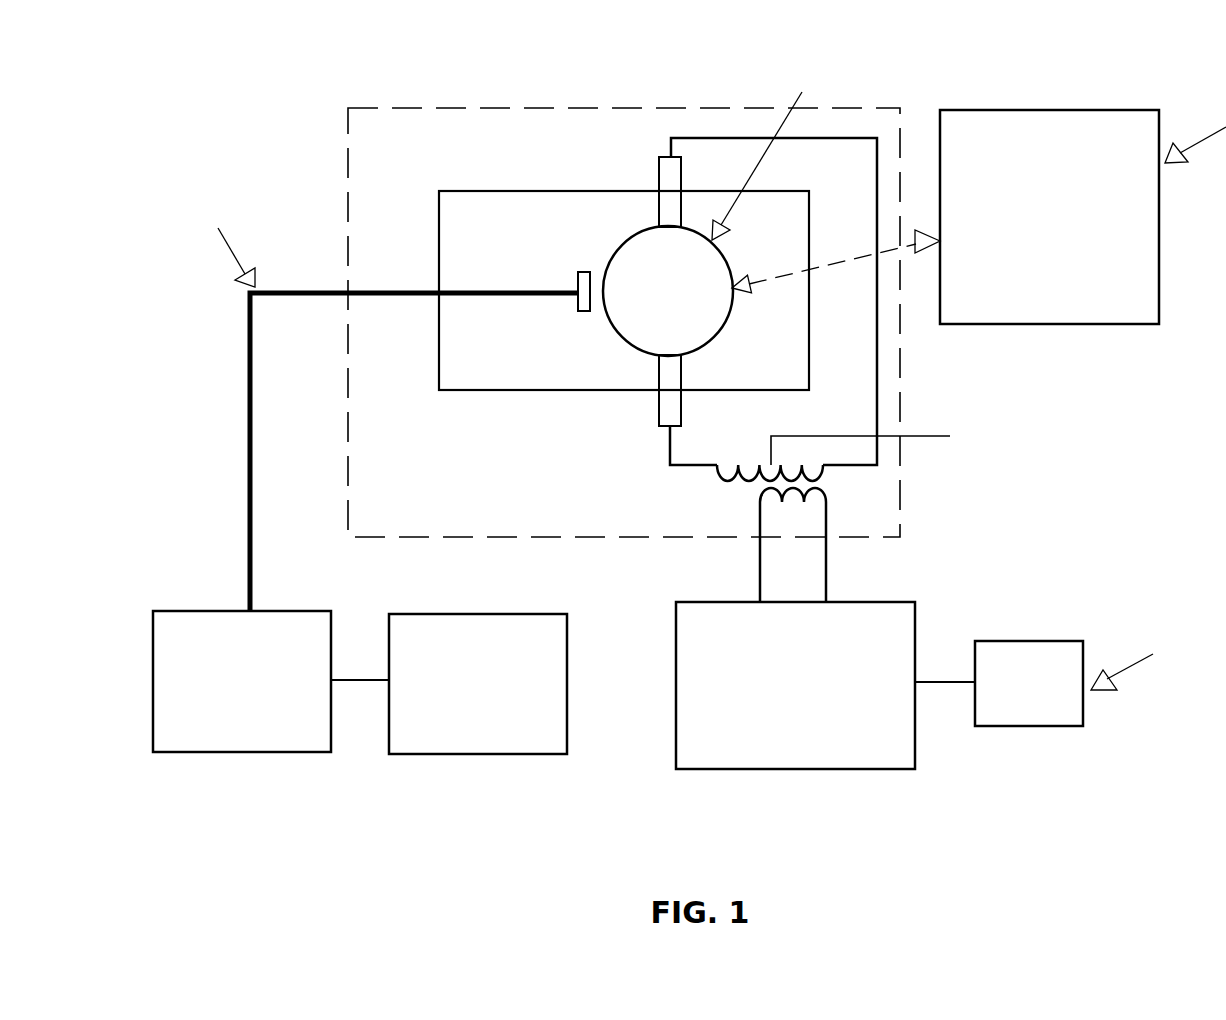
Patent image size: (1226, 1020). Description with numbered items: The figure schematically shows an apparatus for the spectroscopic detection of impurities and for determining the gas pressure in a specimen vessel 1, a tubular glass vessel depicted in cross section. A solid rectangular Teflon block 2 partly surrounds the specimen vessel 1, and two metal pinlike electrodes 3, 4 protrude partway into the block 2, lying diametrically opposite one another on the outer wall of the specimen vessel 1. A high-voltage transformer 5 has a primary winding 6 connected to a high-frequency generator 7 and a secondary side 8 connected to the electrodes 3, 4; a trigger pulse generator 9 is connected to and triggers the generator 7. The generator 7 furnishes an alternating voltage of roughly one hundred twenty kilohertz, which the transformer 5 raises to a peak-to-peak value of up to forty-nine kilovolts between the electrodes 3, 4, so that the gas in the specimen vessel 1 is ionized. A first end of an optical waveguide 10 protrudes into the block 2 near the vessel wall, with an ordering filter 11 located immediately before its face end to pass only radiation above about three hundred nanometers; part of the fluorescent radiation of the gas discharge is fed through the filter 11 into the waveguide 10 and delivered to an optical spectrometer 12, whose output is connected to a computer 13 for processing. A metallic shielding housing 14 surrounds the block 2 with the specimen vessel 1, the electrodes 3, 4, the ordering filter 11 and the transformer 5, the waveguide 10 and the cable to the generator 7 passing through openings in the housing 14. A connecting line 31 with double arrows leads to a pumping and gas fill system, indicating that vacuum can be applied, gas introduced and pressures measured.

The specimen vessel 1 is at (628, 245).
The block 2 is at (496, 191).
The electrode 3 is at (668, 178).
The electrode 4 is at (656, 409).
The high-voltage transformer 5 is at (850, 485).
The primary winding 6 is at (830, 502).
The high-frequency generator 7 is at (794, 769).
The secondary side 8 is at (874, 444).
The trigger pulse generator 9 is at (1029, 726).
The optical waveguide 10 is at (295, 290).
The ordering filter 11 is at (577, 307).
The optical spectrometer 12 is at (244, 752).
The computer 13 is at (472, 754).
The shielding housing 14 is at (901, 385).
The connecting line 31 is at (847, 261).